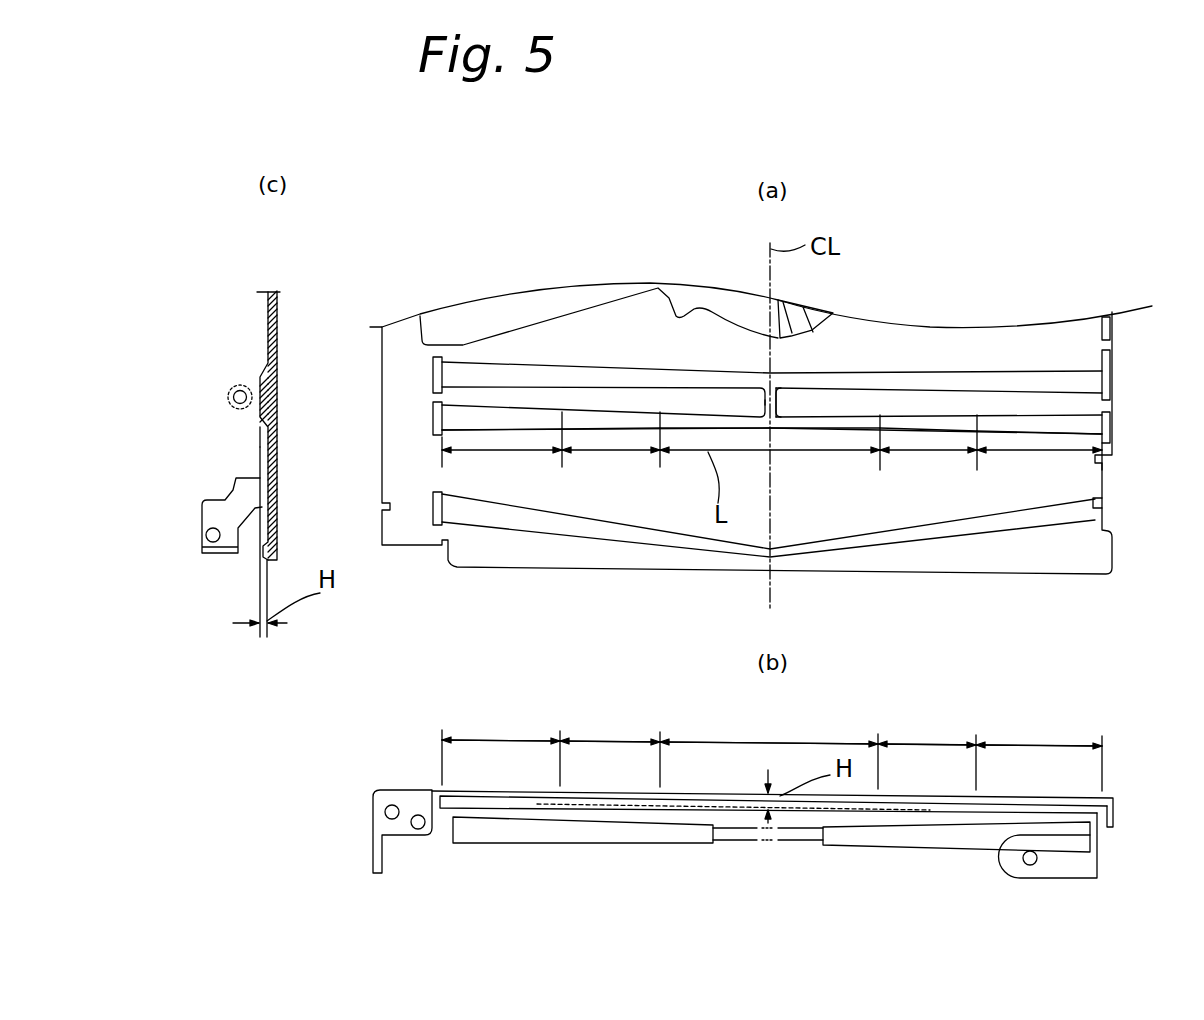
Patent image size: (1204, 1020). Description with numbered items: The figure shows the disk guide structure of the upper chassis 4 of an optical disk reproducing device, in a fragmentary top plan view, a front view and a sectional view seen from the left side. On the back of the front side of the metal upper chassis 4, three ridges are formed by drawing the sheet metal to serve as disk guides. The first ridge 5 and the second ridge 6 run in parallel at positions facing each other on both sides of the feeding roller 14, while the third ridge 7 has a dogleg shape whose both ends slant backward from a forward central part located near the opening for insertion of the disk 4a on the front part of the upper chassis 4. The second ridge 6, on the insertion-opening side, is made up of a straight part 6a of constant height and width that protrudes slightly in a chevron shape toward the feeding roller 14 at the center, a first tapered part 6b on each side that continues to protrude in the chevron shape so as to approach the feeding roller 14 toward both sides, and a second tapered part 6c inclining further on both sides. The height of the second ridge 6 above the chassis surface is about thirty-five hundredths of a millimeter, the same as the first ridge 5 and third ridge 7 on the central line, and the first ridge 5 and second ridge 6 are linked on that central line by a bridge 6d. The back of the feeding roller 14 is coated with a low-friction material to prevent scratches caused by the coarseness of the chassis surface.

In FIG. 5A, the upper chassis 4 is at (960, 343).
In FIG. 5B, the upper chassis 4 is at (743, 831).
In FIG. 5C, the upper chassis 4 is at (278, 310).
In FIG. 5B, the opening for insertion of the disk 4a is at (1077, 832).
In FIG. 5A, the first ridge 5 is at (1083, 386).
In FIG. 5C, the first ridge 5 is at (267, 362).
In FIG. 5A, the second ridge 6 is at (1087, 430).
In FIG. 5A, the straight part 6a is at (833, 428).
In FIG. 5B, the straight part 6a is at (699, 742).
In FIG. 5C, the straight part 6a is at (260, 423).
In FIG. 5A, the first tapered part 6b is at (597, 420).
In FIG. 5B, the first tapered part 6b is at (605, 742).
In FIG. 5A, the second tapered part 6c is at (505, 418).
In FIG. 5B, the second tapered part 6c is at (506, 740).
In FIG. 5A, the bridge 6d is at (778, 398).
In FIG. 5C, the bridge 6d is at (272, 388).
In FIG. 5A, the third ridge 7 is at (1077, 520).
In FIG. 5C, the third ridge 7 is at (260, 547).
In FIG. 5B, the feeding roller 14 is at (582, 845).
In FIG. 5C, the feeding roller 14 is at (228, 405).